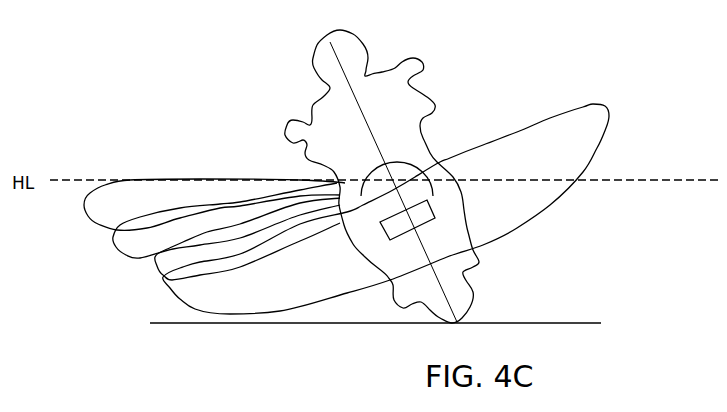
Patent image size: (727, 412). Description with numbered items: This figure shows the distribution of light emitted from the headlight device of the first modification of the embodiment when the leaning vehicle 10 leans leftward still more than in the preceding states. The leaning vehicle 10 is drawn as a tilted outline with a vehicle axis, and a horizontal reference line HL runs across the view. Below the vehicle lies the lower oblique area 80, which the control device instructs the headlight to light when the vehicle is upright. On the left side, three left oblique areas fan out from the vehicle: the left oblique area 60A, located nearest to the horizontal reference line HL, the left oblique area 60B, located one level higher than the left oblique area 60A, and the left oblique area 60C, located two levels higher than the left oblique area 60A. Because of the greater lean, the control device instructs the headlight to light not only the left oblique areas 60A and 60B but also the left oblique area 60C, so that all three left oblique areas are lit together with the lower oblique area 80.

The leaning vehicle 10 is at (497, 264).
The left oblique area 60A is at (161, 270).
The left oblique area 60B is at (127, 256).
The left oblique area 60C is at (91, 221).
The lower oblique area 80 is at (196, 308).